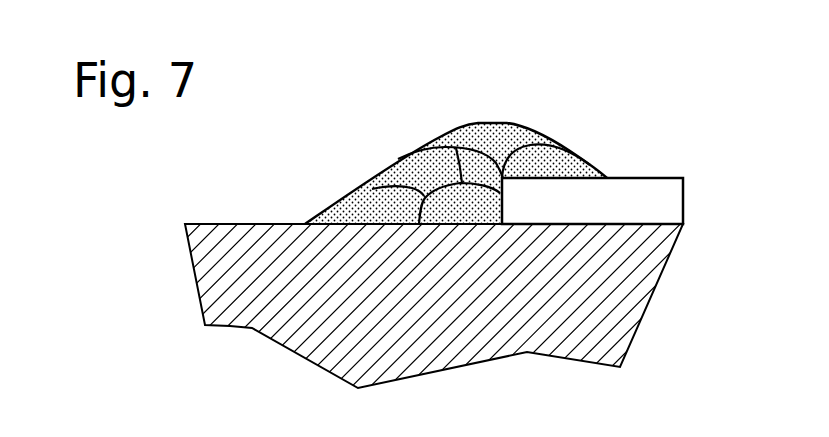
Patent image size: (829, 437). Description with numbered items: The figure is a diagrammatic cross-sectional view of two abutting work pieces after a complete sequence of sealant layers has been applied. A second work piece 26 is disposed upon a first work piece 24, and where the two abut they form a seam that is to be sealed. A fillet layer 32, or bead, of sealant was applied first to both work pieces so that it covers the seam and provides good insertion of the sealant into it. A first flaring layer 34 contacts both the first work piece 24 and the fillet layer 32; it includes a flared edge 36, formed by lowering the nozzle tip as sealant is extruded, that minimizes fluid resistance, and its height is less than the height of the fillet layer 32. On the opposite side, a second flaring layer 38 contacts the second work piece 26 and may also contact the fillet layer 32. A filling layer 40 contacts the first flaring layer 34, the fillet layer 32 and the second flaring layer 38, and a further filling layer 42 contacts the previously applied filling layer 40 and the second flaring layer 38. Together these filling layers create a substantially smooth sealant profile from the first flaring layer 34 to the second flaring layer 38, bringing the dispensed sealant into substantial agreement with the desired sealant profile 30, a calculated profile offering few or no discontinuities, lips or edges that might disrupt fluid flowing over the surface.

The first work piece 24 is at (207, 223).
The second work piece 26 is at (653, 178).
The desired sealant profile 30 is at (513, 124).
The fillet layer 32 is at (443, 147).
The first flaring layer 34 is at (378, 198).
The flared edge 36 is at (316, 214).
The second flaring layer 38 is at (548, 142).
The filling layer 40 is at (390, 175).
The filling layer 42 is at (467, 123).